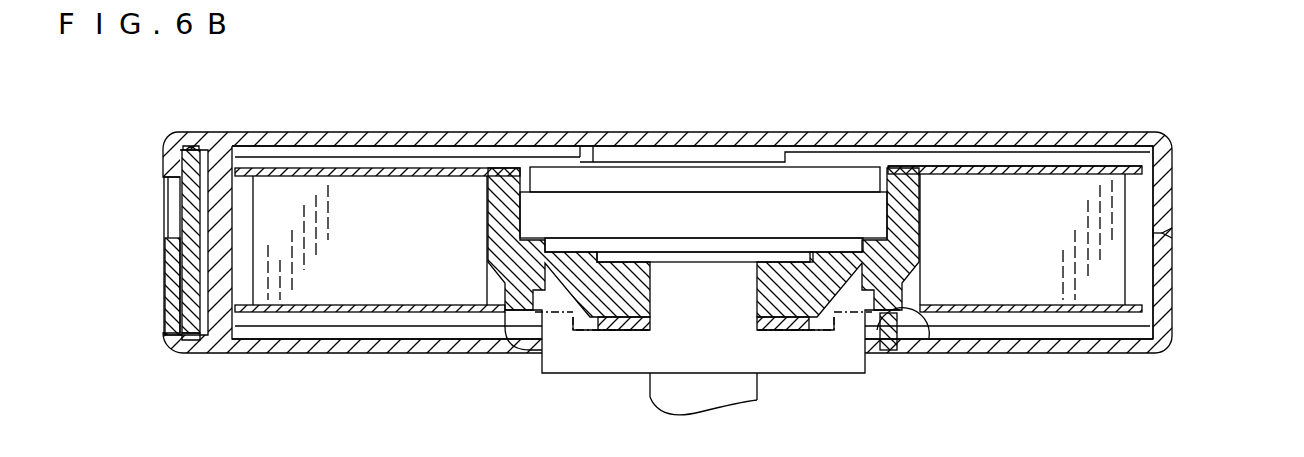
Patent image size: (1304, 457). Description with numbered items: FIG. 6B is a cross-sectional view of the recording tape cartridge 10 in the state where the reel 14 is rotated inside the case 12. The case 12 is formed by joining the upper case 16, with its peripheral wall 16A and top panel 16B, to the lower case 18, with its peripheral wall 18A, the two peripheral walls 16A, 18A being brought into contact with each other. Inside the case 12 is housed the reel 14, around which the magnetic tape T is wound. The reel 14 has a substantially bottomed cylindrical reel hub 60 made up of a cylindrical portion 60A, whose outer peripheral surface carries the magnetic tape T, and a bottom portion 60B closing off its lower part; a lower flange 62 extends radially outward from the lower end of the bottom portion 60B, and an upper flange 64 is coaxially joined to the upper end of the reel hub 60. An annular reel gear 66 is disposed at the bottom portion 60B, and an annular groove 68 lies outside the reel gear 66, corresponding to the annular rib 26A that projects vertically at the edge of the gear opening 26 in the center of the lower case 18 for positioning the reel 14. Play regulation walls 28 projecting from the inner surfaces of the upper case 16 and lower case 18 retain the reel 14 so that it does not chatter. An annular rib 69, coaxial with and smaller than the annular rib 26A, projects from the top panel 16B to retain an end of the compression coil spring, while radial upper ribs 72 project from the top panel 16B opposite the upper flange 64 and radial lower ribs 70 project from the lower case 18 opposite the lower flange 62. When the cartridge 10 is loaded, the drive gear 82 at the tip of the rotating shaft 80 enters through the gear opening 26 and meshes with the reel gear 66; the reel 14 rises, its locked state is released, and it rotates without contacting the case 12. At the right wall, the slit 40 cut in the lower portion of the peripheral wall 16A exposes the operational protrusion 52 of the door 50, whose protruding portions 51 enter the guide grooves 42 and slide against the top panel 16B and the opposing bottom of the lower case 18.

The recording tape cartridge 10 is at (1188, 104).
The case 12 is at (1240, 200).
The reel 14 is at (1075, 163).
The upper case 16 is at (1173, 213).
The peripheral wall 16A is at (178, 150).
The top panel 16B is at (493, 132).
The lower case 18 is at (1173, 258).
The peripheral wall 18A is at (163, 342).
The gear opening 26 is at (558, 33).
The annular rib 26A is at (530, 350).
The play regulation walls 28 is at (178, 268).
The slit 40 is at (165, 234).
The guide grooves 42 is at (212, 150).
The door 50 is at (177, 325).
The protruding portions 51 is at (192, 340).
The operational protrusion 52 is at (160, 183).
The reel hub 60 is at (1040, 68).
The cylindrical portion 60A is at (915, 190).
The bottom portion 60B is at (890, 240).
The lower flange 62 is at (333, 305).
The upper flange 64 is at (374, 176).
The reel gear 66 is at (553, 315).
The annular groove 68 is at (492, 288).
The annular rib 69 is at (745, 152).
The lower ribs 70 is at (400, 335).
The upper ribs 72 is at (412, 145).
The rotating shaft 80 is at (778, 375).
The drive gear 82 is at (840, 318).
The magnetic tape T is at (346, 190).